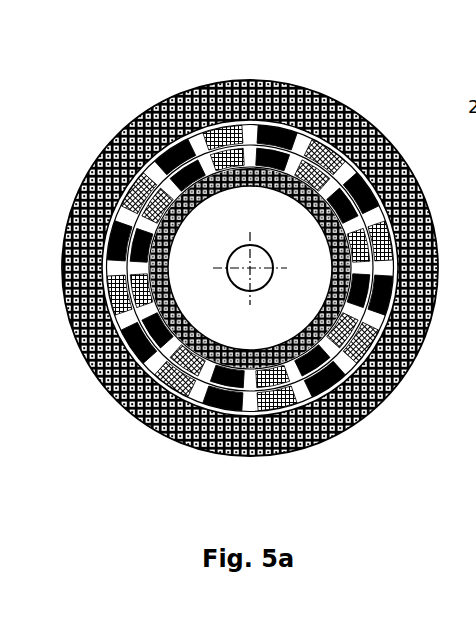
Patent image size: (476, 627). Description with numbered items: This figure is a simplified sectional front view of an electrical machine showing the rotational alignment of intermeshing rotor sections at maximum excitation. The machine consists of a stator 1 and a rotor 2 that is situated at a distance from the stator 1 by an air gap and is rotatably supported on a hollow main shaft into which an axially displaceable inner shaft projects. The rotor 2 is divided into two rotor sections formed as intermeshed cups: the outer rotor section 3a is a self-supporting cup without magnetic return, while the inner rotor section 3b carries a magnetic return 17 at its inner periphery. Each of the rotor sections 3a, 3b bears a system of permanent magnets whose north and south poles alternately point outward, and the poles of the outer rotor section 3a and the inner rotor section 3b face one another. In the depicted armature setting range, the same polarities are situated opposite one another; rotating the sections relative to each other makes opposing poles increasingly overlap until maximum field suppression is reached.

The stator 1 is at (218, 80).
The rotor 2 is at (103, 148).
The outer rotor section 3a is at (175, 97).
The inner rotor section 3b is at (133, 118).
The magnetic return 17 is at (250, 165).